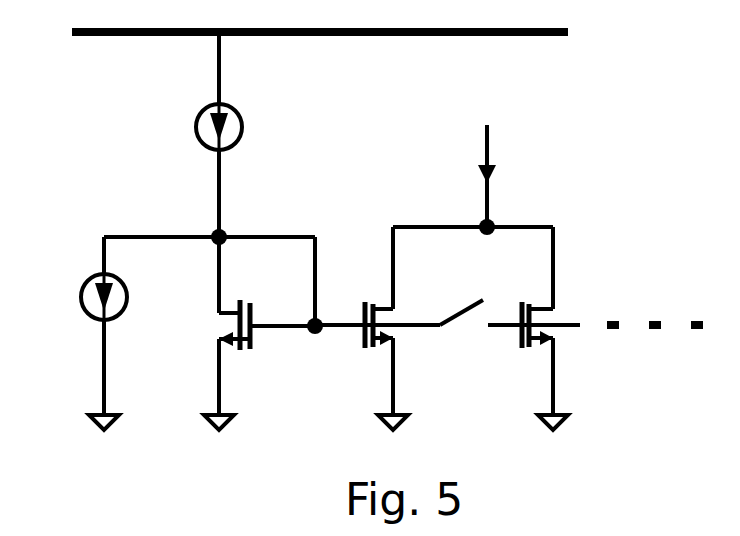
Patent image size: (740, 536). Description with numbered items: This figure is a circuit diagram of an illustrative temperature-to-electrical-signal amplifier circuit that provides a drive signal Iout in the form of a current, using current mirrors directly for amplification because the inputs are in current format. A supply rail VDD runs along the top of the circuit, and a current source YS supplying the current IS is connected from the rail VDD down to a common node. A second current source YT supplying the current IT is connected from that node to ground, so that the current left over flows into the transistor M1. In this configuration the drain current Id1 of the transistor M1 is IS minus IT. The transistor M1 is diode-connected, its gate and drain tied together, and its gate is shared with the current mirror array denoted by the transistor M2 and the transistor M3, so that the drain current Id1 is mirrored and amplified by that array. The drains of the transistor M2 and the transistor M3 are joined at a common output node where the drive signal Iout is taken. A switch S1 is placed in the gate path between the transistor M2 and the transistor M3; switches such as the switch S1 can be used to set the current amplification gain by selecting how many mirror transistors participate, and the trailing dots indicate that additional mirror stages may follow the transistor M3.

The supply voltage rail VDD is at (360, 31).
The current source YS = IS YS is at (263, 134).
The current source YT = IT YT is at (67, 333).
The drain current Id1 is at (197, 275).
The transistor M1 is at (259, 348).
The current mirror transistor M2 is at (382, 328).
The current mirror transistor M3 is at (569, 328).
The switch S1 is at (510, 336).
The drive signal Iout is at (513, 176).